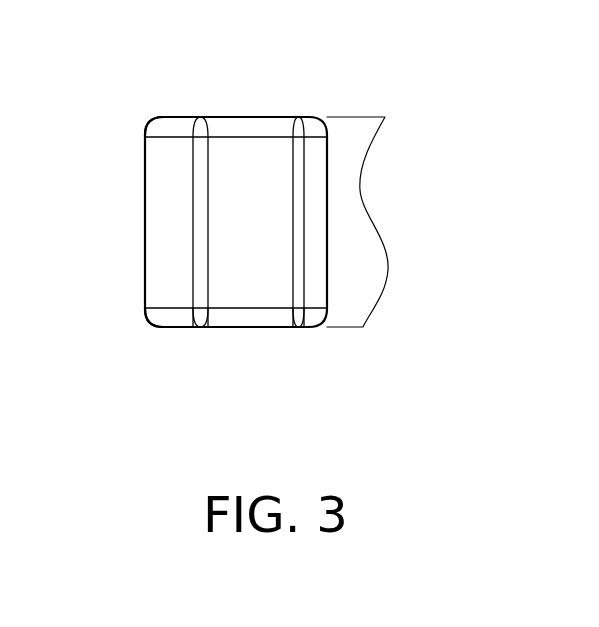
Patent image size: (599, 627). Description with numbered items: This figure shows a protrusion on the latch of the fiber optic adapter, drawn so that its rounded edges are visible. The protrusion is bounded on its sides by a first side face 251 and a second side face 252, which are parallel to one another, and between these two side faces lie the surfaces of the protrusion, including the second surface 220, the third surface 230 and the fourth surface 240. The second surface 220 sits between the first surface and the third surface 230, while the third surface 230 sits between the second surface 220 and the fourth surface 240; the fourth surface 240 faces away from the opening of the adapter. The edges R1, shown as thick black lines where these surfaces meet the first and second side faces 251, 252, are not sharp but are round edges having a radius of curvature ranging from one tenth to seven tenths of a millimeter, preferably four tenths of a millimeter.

The second surface 220 is at (168, 220).
The third surface 230 is at (237, 268).
The fourth surface 240 is at (312, 218).
The first side face 251 is at (250, 117).
The second side face 252 is at (280, 327).
The round edges R1 is at (175, 125).